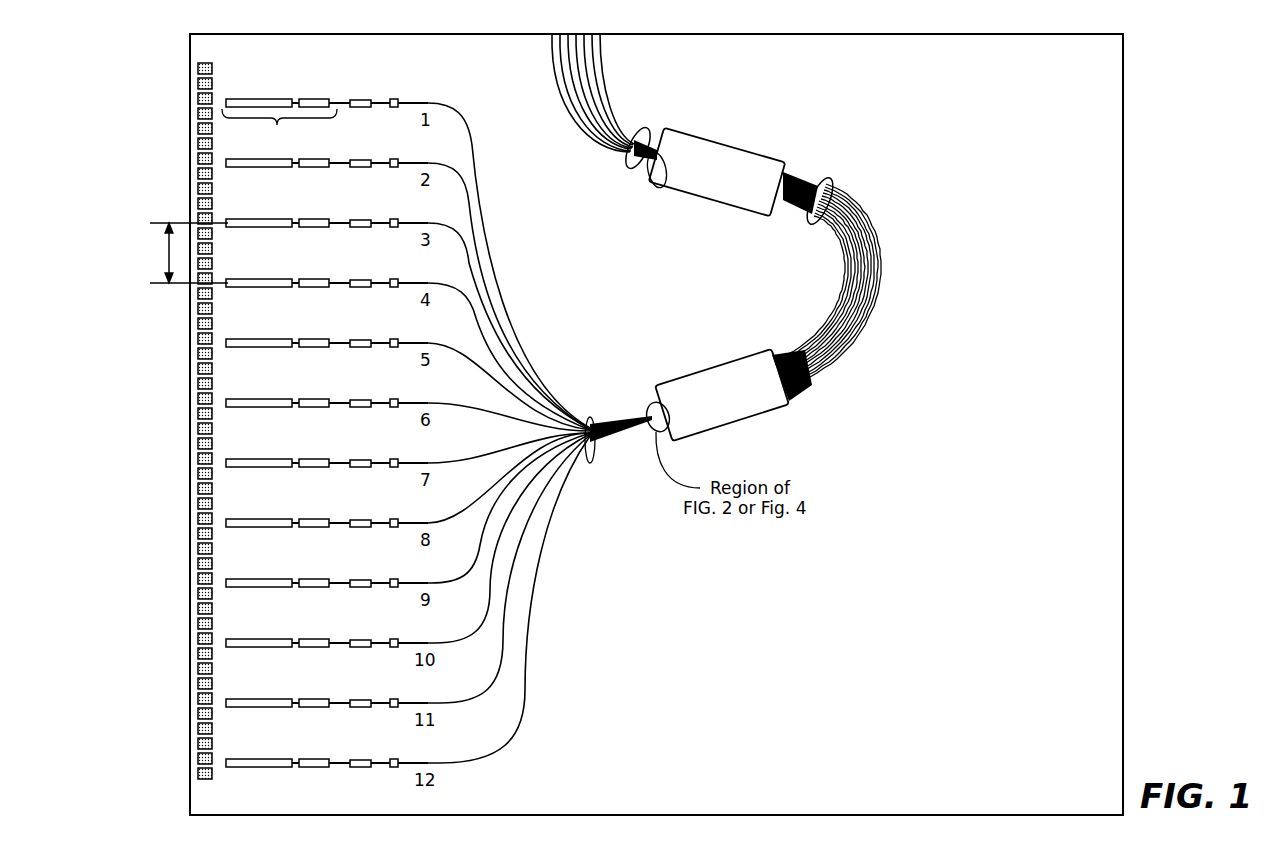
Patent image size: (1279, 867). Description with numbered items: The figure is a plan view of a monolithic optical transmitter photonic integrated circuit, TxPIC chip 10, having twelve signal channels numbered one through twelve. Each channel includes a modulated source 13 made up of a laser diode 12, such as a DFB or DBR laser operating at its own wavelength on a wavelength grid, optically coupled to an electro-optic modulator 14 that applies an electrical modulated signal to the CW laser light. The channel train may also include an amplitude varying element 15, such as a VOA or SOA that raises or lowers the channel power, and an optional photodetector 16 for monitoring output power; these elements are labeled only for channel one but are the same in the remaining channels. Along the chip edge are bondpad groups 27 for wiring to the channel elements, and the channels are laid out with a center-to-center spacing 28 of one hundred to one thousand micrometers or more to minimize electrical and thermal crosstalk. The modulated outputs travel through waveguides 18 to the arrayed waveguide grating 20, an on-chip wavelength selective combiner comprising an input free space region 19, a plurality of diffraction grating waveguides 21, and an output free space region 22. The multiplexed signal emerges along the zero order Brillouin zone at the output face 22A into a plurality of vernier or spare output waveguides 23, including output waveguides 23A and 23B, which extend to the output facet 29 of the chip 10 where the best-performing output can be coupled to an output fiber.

The TxPIC chip 10 is at (1090, 70).
The laser diode 12 is at (248, 100).
The modulated source 13 is at (279, 130).
The electro-optic modulator 14 is at (309, 100).
The amplitude varying element 15 is at (358, 100).
The photodetector 16 is at (395, 100).
The waveguides 18 is at (540, 433).
The input free space region 19 is at (711, 409).
The arrayed waveguide grating 20 is at (872, 205).
The diffraction grating waveguides 21 is at (832, 178).
The output free space region 22 is at (704, 176).
The output face 22A is at (660, 188).
The output waveguides 23 is at (645, 130).
The output waveguide 23A is at (548, 50).
The output waveguide 23B is at (603, 52).
The bondpad groups 27 is at (190, 58).
The center-to-center spacing 28 is at (160, 254).
The output facet 29 is at (805, 35).